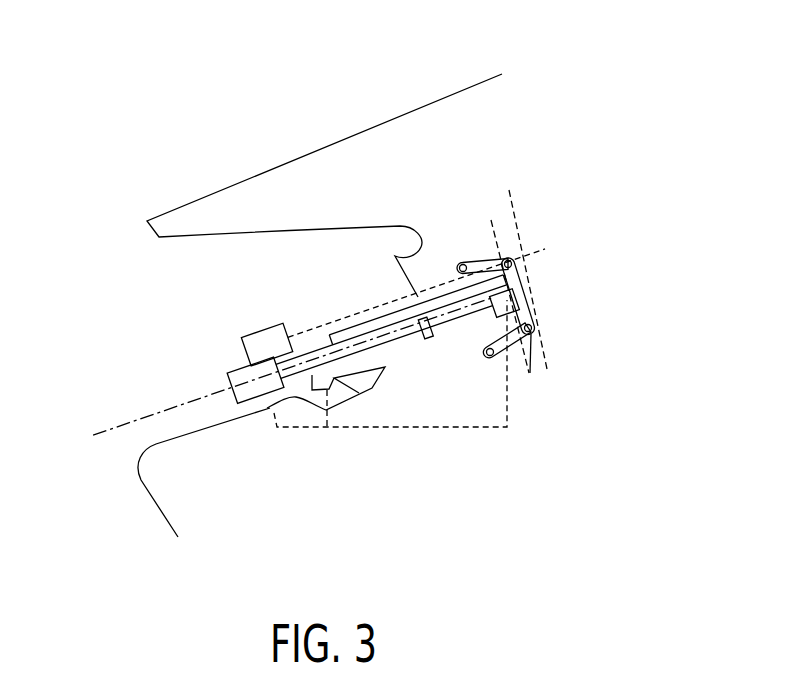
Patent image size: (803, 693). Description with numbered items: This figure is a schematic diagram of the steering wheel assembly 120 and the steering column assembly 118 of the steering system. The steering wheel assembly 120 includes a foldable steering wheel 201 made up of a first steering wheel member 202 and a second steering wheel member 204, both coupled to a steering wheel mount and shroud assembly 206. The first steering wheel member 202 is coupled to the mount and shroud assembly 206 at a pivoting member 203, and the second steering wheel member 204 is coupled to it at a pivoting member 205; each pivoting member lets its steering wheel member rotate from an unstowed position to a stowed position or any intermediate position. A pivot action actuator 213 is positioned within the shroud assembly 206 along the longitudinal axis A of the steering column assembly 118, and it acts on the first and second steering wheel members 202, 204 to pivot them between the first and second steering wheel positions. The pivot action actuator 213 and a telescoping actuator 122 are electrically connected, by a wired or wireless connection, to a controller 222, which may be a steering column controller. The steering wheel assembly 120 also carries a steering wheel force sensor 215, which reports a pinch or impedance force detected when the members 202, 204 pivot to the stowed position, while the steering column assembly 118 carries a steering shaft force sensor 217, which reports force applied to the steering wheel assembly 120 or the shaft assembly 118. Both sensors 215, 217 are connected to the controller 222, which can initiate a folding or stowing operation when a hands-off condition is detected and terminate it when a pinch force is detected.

The steering wheel assembly 120 is at (540, 170).
The steering column assembly 118 is at (375, 333).
The telescoping actuator 122 is at (359, 393).
The foldable steering wheel 201 is at (436, 288).
The first steering wheel member 202 is at (501, 206).
The pivoting member 203 is at (514, 259).
The second steering wheel member 204 is at (408, 363).
The pivoting member 205 is at (533, 330).
The steering wheel mount and shroud assembly 206 is at (453, 297).
The pivot action actuator 213 is at (515, 297).
The steering wheel force sensor 215 is at (522, 257).
The steering shaft force sensor 217 is at (431, 340).
The controller 222 is at (263, 340).
The longitudinal axis A is at (177, 402).